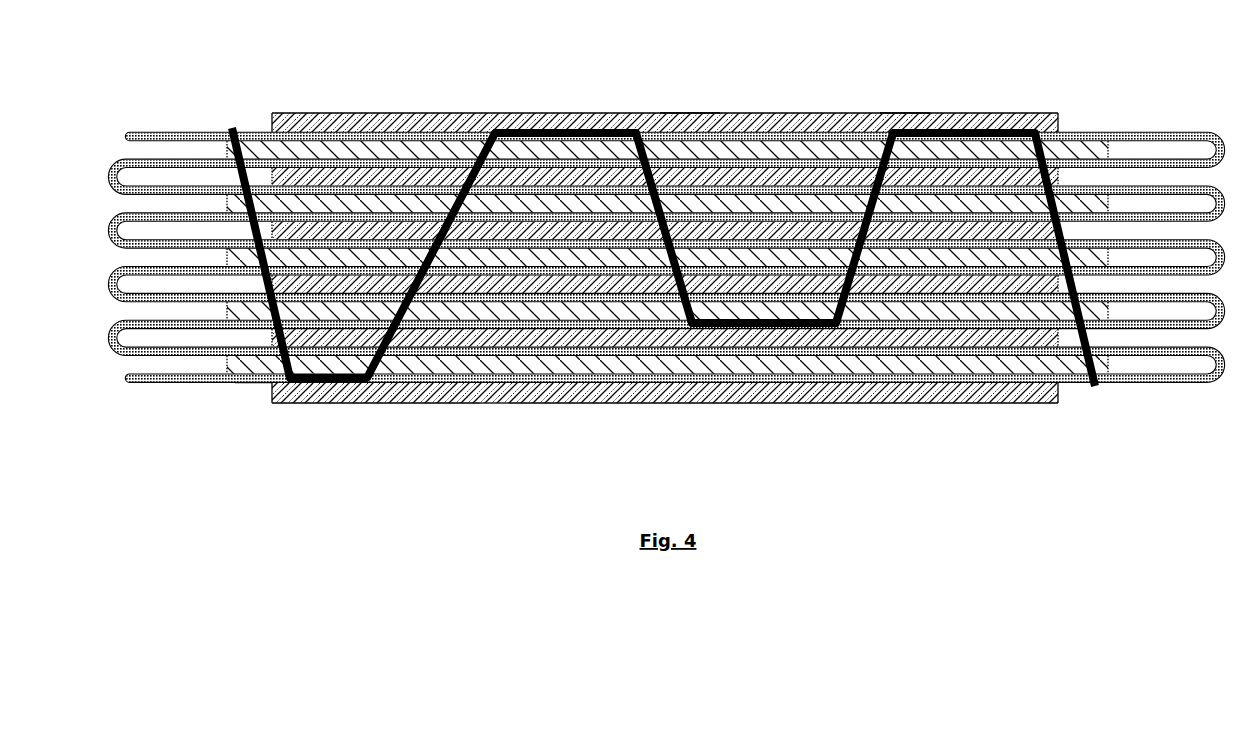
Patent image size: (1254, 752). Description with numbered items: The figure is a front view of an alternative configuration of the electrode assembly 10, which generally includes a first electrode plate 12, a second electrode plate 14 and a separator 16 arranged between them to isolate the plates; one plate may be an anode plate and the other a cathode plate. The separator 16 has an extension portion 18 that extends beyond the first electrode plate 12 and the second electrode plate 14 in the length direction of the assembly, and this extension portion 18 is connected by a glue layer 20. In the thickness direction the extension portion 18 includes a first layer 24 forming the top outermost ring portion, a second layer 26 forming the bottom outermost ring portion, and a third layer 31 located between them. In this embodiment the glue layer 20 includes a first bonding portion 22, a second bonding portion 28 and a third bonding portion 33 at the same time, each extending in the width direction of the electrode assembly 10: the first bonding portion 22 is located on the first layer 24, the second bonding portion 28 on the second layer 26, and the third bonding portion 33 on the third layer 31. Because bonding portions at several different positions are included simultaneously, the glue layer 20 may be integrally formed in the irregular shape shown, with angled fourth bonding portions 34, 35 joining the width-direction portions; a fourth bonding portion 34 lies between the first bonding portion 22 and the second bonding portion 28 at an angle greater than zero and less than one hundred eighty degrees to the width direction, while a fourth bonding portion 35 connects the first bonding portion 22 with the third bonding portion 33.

The electrode assembly 10 is at (670, 255).
The first electrode plate 12 is at (1085, 158).
The second electrode plate 14 is at (880, 118).
The separator 16 is at (750, 113).
The extension portion 18 is at (450, 113).
The glue layer 20 is at (545, 113).
The first bonding portion 22 is at (608, 113).
The first layer 24 is at (690, 113).
The second layer 26 is at (413, 398).
The second bonding portion 28 is at (347, 385).
The third layer 31 is at (493, 385).
The third bonding portion 33 is at (787, 398).
The fourth bonding portion 34 is at (407, 113).
The fourth bonding portion 35 is at (655, 398).